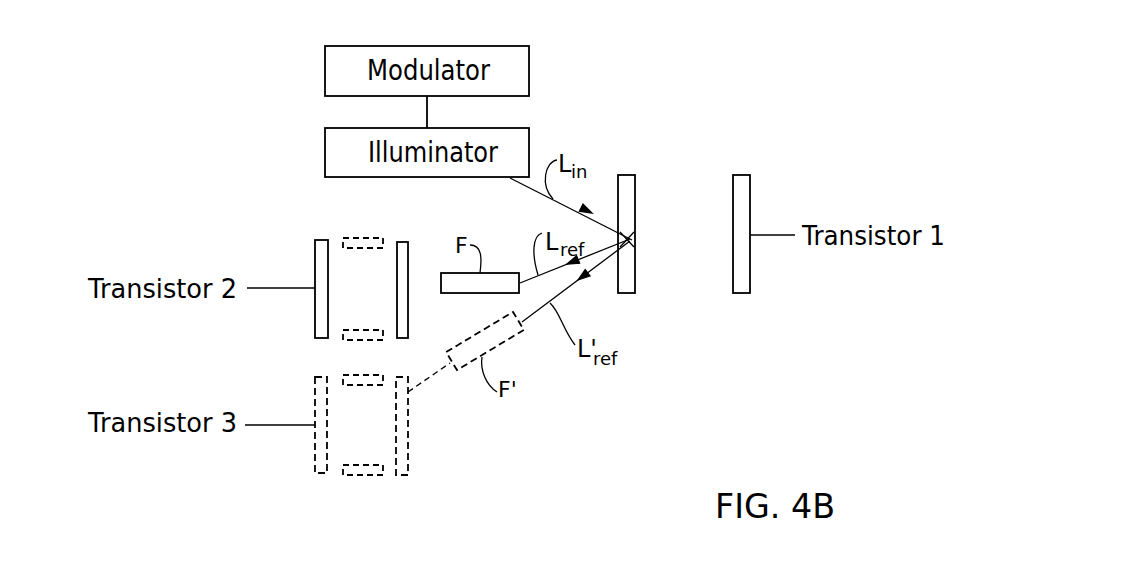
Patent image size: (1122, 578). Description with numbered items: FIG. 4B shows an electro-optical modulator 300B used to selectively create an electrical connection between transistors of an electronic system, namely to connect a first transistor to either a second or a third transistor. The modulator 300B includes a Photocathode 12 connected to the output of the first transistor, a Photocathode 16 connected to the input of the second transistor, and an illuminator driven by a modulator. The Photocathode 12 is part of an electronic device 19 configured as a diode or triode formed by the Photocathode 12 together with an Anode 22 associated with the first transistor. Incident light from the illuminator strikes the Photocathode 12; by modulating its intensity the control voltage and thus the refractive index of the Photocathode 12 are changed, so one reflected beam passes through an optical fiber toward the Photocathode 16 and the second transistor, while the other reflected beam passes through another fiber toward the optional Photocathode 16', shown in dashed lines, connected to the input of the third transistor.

The Photocathode 12 is at (628, 175).
The Photocathode 16 is at (421, 271).
The Photocathode 16' is at (424, 408).
The electronic device 19 is at (698, 337).
The Anode 22 is at (750, 180).
The electro-optical modulator 300B is at (755, 57).